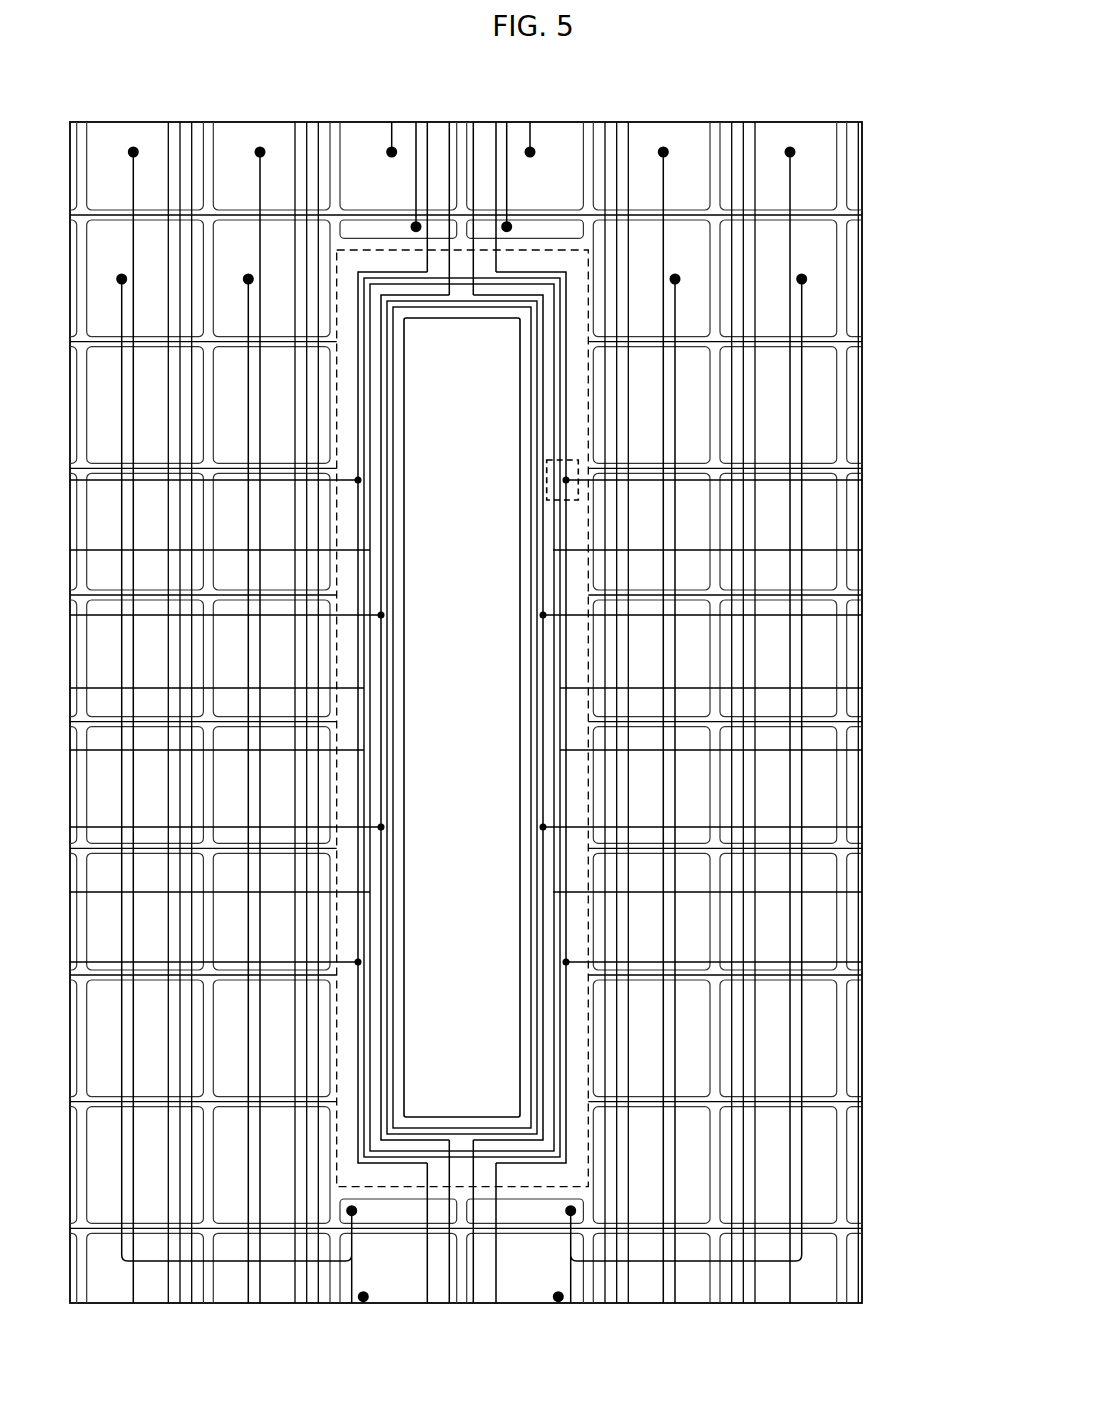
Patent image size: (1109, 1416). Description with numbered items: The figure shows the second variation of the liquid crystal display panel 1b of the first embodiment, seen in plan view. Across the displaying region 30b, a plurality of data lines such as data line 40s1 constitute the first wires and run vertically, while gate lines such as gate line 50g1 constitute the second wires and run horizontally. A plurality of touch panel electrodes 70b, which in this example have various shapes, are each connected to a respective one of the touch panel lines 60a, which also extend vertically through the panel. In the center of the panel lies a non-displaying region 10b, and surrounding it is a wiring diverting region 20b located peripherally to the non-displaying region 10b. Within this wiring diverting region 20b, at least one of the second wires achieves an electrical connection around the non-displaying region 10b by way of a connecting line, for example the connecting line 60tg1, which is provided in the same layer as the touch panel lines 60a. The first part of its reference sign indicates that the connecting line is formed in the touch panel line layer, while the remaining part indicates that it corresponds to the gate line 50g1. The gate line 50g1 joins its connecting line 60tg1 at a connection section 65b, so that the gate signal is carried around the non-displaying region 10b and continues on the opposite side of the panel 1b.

The liquid crystal display panel 1b is at (808, 111).
The non-displaying region 10b is at (493, 1025).
The wiring diverting region 20b is at (578, 510).
The displaying region 30b is at (820, 418).
The data line 40s1 is at (427, 138).
The gate line 50g1 is at (828, 483).
The touch panel line 60a is at (237, 1261).
The connecting line 60tg1 is at (567, 370).
The connection section 65b is at (578, 458).
The touch panel electrode 70b is at (555, 167).